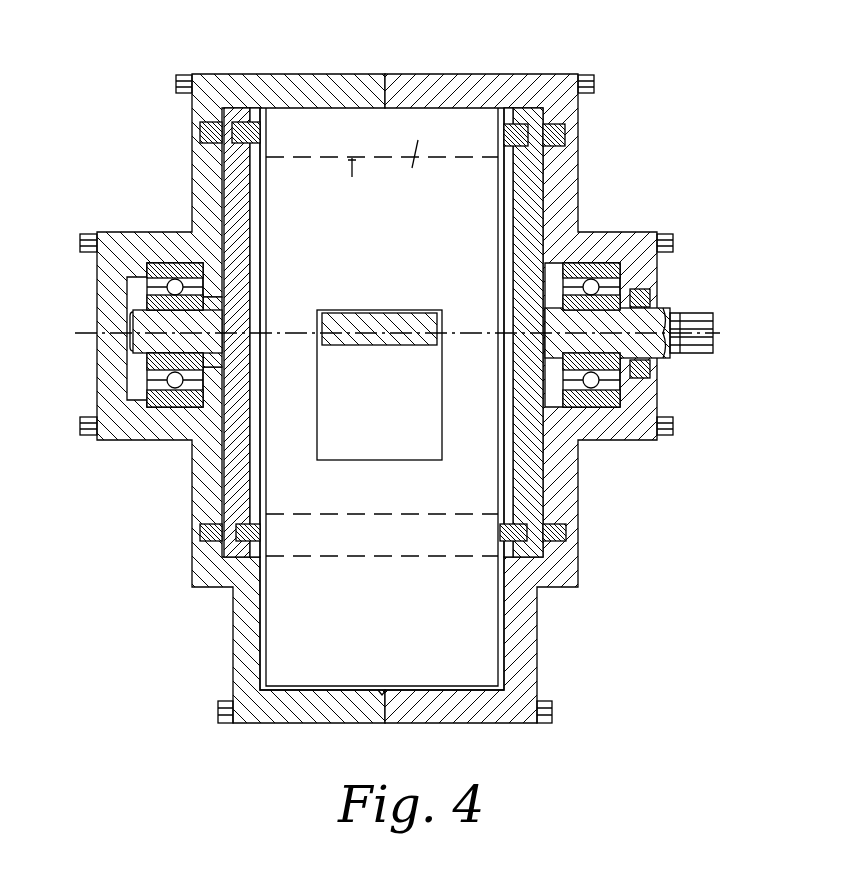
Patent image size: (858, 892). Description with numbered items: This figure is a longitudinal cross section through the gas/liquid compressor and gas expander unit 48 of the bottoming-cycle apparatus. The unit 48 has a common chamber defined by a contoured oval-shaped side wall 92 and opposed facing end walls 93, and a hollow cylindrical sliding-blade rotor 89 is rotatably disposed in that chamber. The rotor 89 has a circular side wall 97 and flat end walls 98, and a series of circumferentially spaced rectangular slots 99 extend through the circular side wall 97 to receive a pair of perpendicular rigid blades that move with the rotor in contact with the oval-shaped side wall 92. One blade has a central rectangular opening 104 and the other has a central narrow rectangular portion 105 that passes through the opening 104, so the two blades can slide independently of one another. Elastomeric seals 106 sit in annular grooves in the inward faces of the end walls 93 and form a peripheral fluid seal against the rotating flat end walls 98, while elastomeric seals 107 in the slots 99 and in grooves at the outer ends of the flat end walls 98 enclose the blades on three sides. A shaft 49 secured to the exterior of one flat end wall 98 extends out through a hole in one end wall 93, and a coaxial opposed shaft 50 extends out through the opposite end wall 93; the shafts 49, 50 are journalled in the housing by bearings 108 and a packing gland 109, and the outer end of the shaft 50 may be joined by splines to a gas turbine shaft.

The gas/liquid compressor and gas expander unit 48 is at (182, 618).
The shaft 49 is at (190, 345).
The coaxial opposed shaft 50 is at (620, 345).
The sliding-blade rotor 89 is at (510, 203).
The oval-shaped side wall 92 is at (443, 690).
The end walls 93 is at (220, 264).
The circular side wall 97 is at (352, 170).
The flat end wall 98 is at (262, 462).
The rectangular slots 99 is at (410, 172).
The central rectangular opening 104 is at (318, 438).
The central narrow rectangular portion 105 is at (377, 335).
The elastomeric seals 106 is at (205, 130).
The elastomeric seals 107 is at (262, 136).
The bearings 108 is at (160, 265).
The packing gland 109 is at (655, 372).